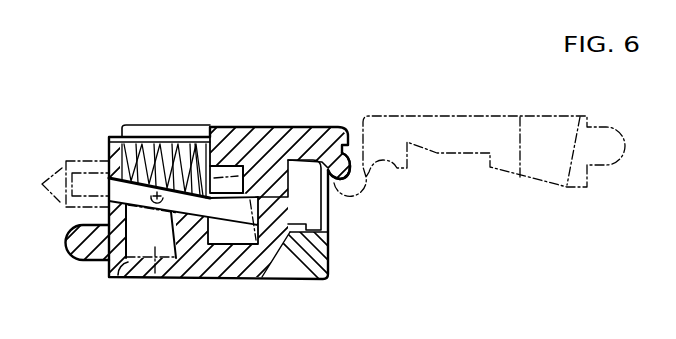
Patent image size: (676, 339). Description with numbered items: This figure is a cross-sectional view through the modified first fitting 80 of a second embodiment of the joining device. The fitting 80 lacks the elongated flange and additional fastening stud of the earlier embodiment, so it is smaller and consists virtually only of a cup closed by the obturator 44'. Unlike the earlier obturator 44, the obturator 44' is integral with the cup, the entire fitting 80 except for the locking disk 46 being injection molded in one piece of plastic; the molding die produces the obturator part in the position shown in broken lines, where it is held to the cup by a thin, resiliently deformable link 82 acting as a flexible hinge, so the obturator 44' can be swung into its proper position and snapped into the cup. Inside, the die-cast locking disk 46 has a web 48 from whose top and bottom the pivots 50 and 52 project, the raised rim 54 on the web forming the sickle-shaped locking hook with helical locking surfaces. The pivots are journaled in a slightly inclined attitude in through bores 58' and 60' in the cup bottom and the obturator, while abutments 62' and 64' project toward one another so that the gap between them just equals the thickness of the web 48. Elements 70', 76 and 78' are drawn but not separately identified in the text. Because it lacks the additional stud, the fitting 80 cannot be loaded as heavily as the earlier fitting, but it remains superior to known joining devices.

The obturator 44 is at (479, 135).
The obturator 44' is at (304, 276).
The locking disk 46 is at (80, 144).
The web 48 is at (95, 190).
The pivot 50 is at (184, 147).
The pivot 52 is at (157, 272).
The raised rim 54 is at (41, 185).
The through bore 58' is at (195, 140).
The through bore 60' is at (131, 287).
The abutment 62' is at (240, 139).
The abutment 64' is at (183, 257).
The mounting lug 70' is at (88, 258).
The housing part 76 is at (312, 252).
The slot 78' is at (329, 219).
The first fitting 80 is at (220, 114).
The link 82 is at (342, 197).